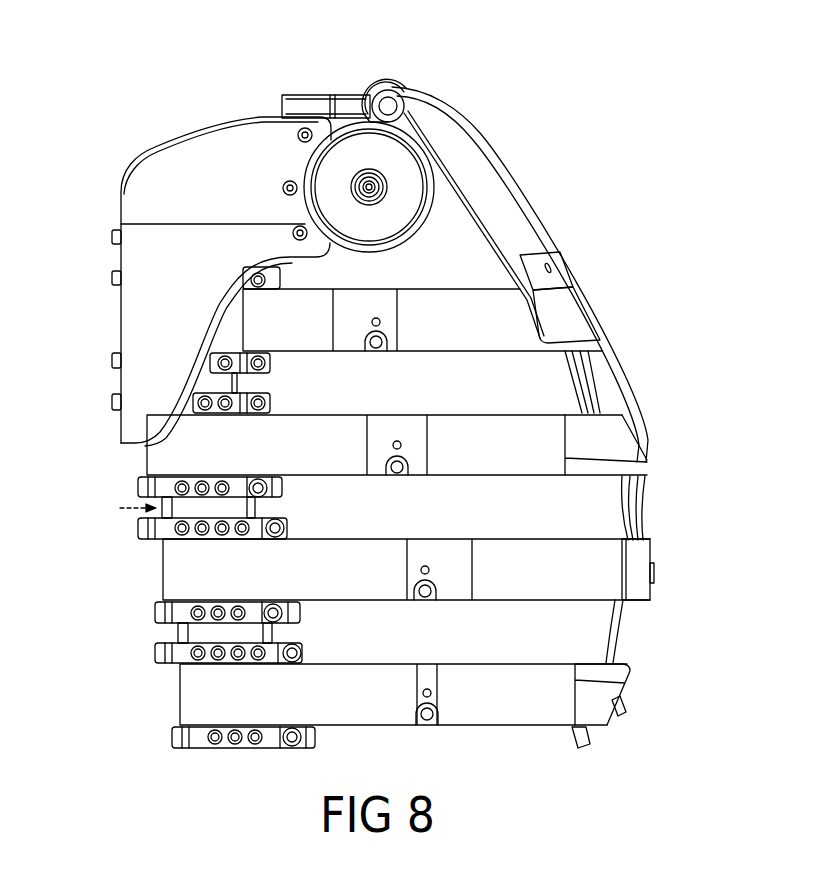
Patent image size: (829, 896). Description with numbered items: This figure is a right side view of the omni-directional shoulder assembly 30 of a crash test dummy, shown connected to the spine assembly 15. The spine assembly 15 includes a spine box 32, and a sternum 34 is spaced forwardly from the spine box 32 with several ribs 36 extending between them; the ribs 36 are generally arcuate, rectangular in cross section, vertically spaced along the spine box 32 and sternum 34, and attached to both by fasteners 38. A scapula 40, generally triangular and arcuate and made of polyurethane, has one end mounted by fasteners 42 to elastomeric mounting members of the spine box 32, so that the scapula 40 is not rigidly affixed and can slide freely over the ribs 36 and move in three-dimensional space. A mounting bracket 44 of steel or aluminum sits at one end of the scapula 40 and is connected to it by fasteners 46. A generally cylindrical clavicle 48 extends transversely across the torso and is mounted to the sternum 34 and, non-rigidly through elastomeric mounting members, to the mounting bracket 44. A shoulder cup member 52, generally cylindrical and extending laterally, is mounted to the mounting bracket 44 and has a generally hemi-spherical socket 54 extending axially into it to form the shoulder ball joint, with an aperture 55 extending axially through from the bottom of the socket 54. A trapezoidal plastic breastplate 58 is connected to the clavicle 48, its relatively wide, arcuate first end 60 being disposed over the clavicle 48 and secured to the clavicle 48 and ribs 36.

The shoulder assembly 30 is at (348, 72).
The spine assembly 15 is at (120, 508).
The spine box 32 is at (197, 630).
The sternum 34 is at (638, 510).
The ribs 36 is at (507, 337).
The fasteners 38 is at (655, 574).
The scapulas 40 is at (158, 184).
The fasteners 42 is at (112, 238).
The mounting brackets 44 is at (305, 104).
The fasteners 46 is at (284, 184).
The clavicles 48 is at (397, 100).
The shoulder cup member 52 is at (434, 185).
The socket 54 is at (402, 212).
The aperture 55 is at (380, 184).
The breastplates 58 is at (530, 237).
The first end 60 is at (376, 90).